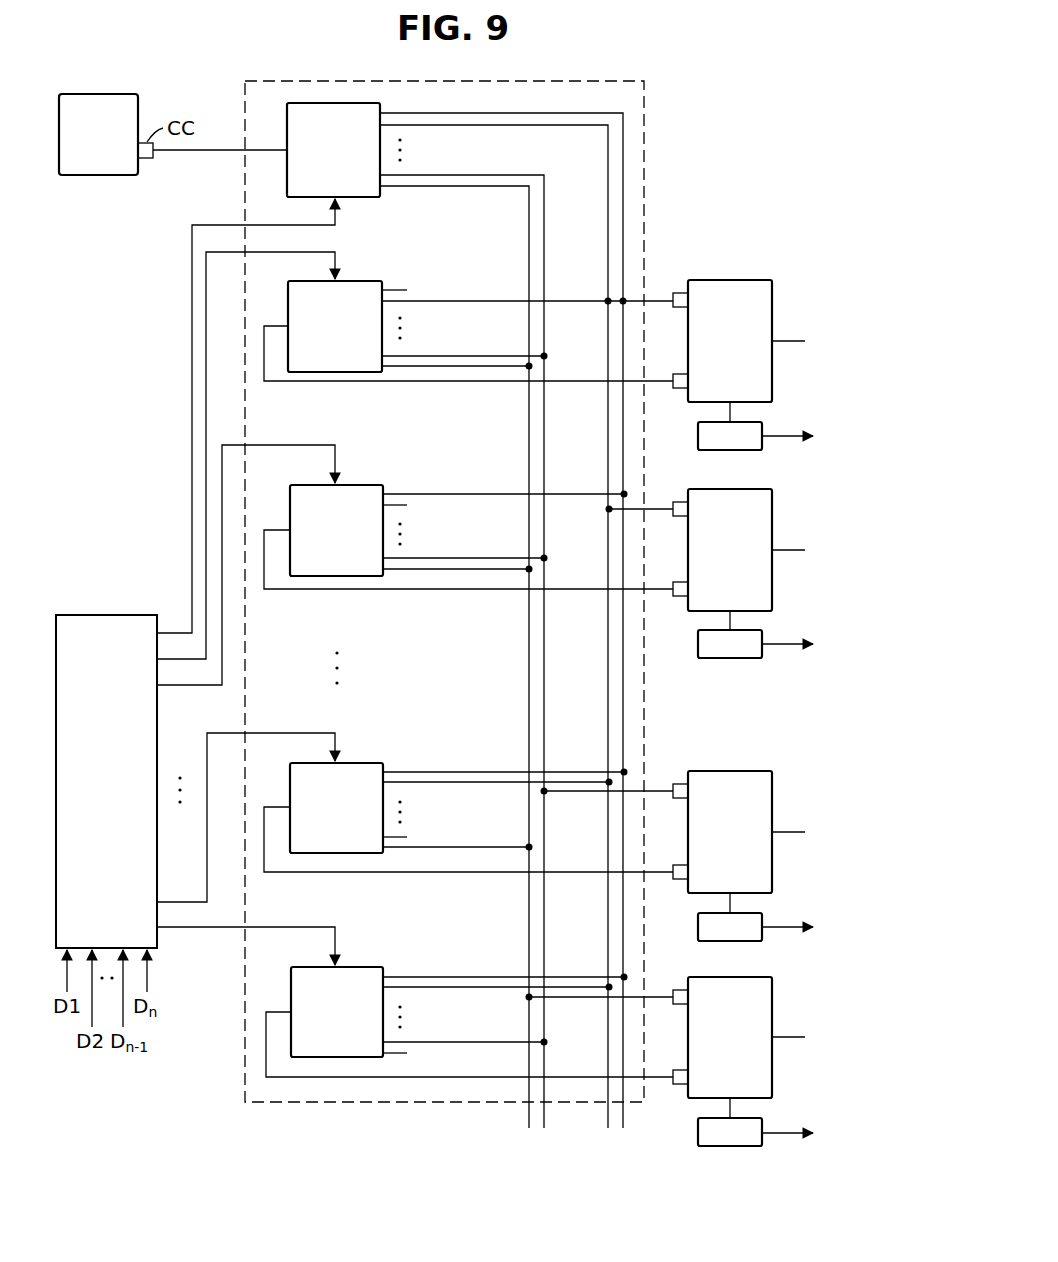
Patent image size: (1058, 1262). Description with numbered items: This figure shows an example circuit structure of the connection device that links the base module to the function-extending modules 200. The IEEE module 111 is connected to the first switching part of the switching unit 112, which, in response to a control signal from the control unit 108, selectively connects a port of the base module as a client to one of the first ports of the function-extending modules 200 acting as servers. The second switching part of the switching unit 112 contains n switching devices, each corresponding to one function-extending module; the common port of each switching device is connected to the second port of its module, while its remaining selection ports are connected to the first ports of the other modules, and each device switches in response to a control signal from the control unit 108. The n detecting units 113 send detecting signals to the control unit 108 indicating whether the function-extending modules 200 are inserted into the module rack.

The IEEE 1394 module 111 is at (102, 93).
The switching unit 112 is at (643, 116).
The detecting unit 113 is at (697, 436).
The control unit 108 is at (103, 615).
The function-extending module 200 is at (734, 271).